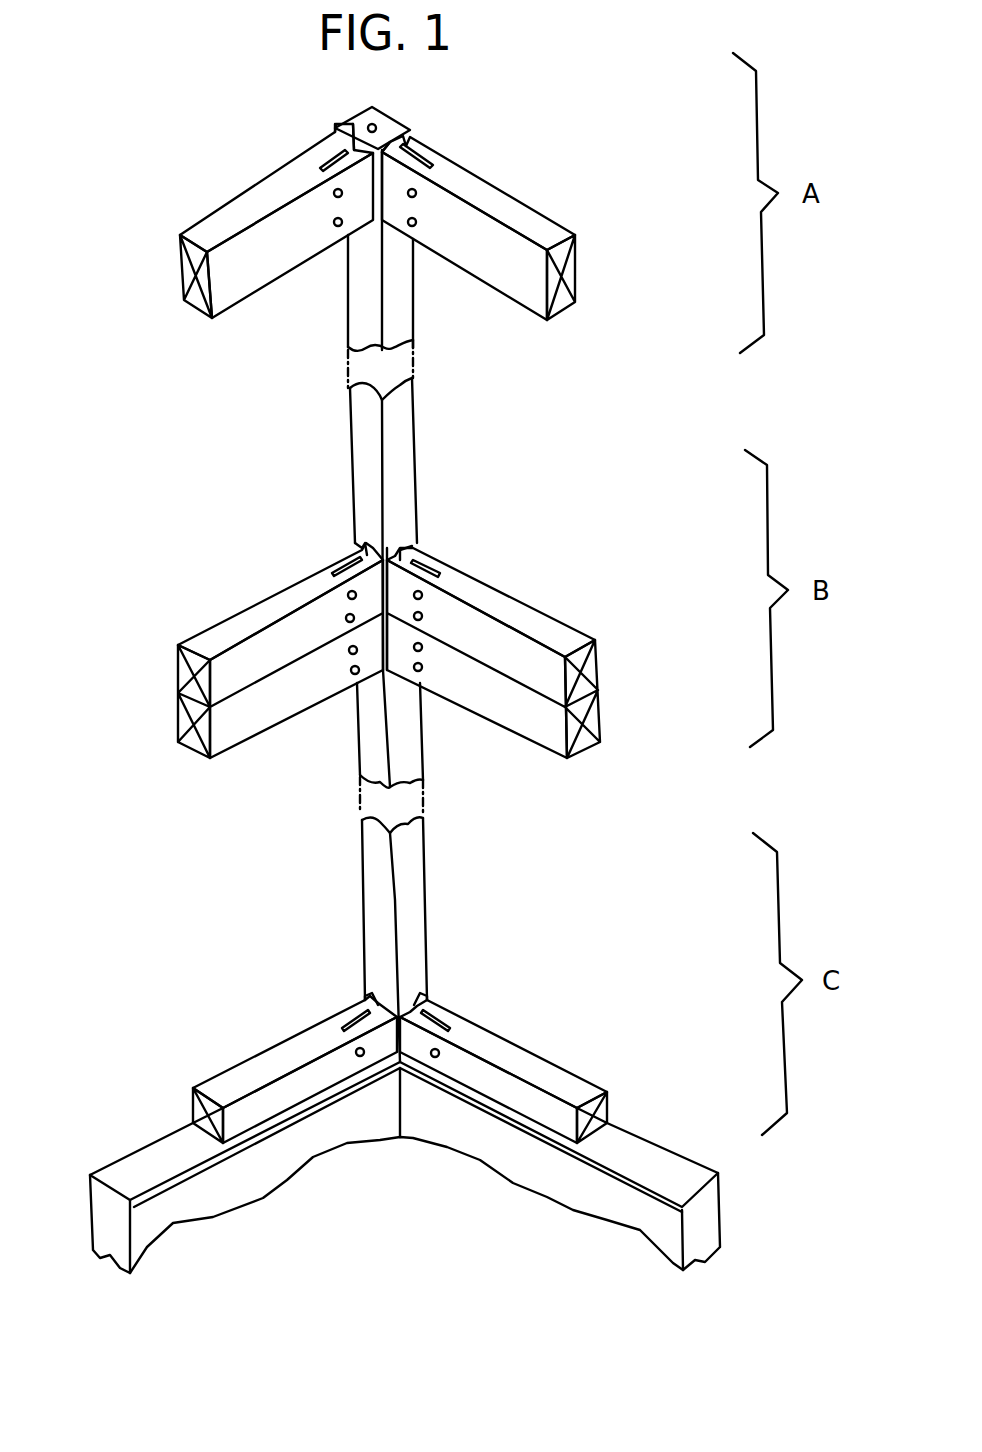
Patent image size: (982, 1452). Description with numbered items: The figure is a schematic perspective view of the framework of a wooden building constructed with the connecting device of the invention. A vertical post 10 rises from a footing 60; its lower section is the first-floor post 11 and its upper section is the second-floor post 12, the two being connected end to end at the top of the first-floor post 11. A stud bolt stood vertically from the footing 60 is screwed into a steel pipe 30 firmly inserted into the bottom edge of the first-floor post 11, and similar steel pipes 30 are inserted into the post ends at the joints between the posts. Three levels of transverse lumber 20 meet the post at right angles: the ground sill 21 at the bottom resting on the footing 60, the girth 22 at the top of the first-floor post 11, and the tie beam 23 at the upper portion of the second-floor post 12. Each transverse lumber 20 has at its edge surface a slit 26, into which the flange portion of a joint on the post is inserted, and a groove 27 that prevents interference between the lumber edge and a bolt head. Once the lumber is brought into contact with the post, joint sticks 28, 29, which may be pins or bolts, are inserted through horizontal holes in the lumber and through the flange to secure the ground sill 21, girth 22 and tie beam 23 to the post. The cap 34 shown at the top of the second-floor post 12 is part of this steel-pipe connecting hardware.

The vertical post 10 is at (455, 606).
The first-floor post 11 is at (410, 905).
The second-floor post 12 is at (400, 433).
The transverse lumber 20 is at (440, 633).
The ground sill 21 is at (562, 1083).
The girth 22 is at (553, 628).
The tie beam 23 is at (547, 230).
The slit 26 is at (333, 162).
The groove 27 is at (352, 127).
The joint stick 28 is at (338, 223).
The joint stick 29 is at (334, 193).
The steel pipe 30 is at (432, 110).
The cap plate 34 is at (374, 127).
The footing 60 is at (700, 1235).